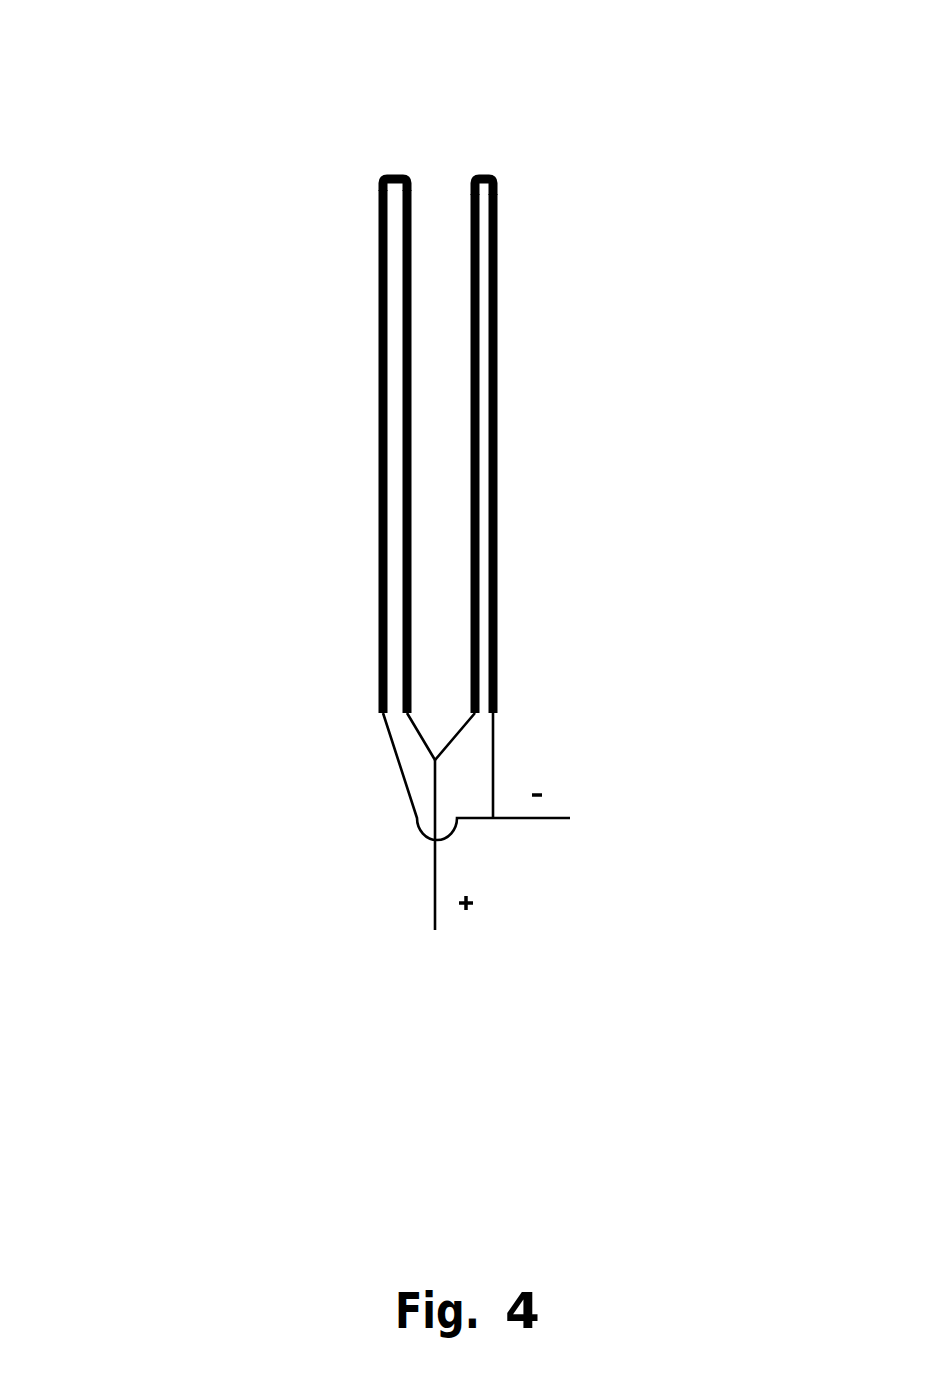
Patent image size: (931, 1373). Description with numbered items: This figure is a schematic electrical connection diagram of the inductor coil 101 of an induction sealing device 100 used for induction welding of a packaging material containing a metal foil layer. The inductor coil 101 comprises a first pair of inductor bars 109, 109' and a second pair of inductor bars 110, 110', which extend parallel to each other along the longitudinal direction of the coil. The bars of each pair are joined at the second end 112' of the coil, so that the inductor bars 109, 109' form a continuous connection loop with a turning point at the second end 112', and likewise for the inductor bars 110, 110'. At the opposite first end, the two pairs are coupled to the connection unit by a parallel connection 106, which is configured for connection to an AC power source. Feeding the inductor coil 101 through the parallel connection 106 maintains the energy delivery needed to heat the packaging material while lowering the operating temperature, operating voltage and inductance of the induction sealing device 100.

The induction sealing device 100 is at (178, 60).
The inductor coil 101 is at (516, 273).
The second end 112' is at (544, 145).
The inductor bar of first pair 109 is at (326, 451).
The inductor bar of first pair 109' is at (331, 451).
The inductor bar of second pair 110 is at (556, 453).
The inductor bar of second pair 110' is at (539, 453).
The parallel connection 106 is at (355, 847).